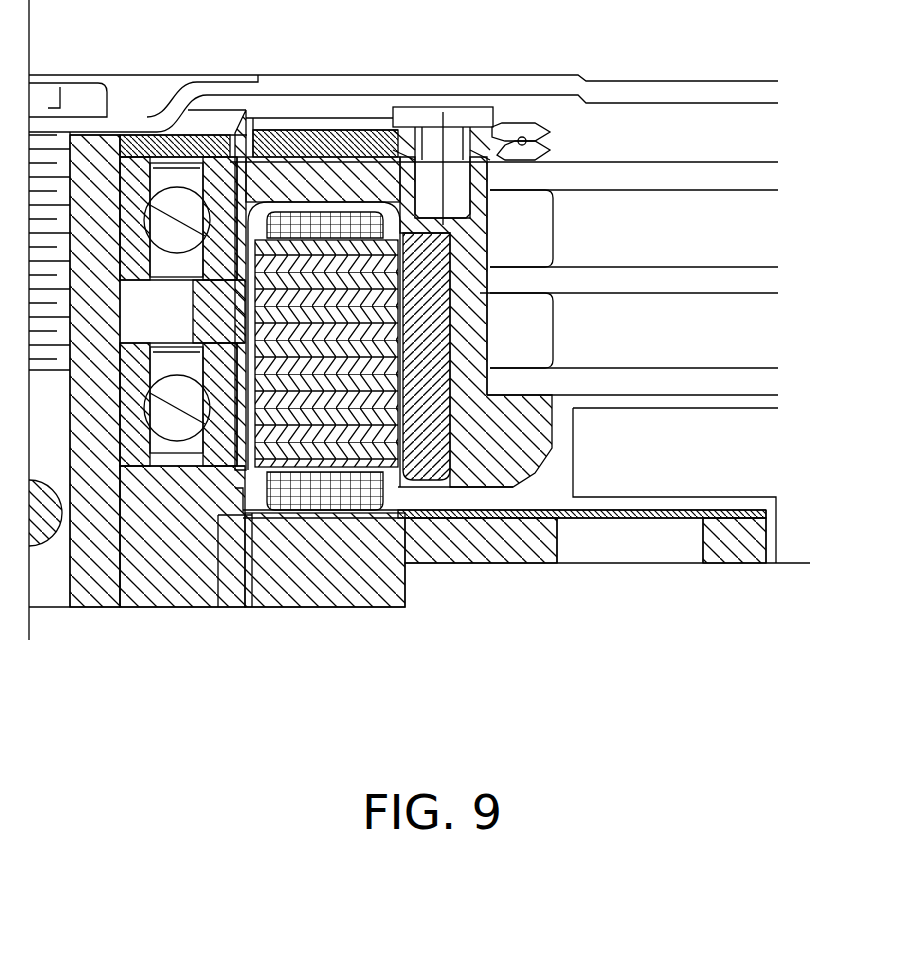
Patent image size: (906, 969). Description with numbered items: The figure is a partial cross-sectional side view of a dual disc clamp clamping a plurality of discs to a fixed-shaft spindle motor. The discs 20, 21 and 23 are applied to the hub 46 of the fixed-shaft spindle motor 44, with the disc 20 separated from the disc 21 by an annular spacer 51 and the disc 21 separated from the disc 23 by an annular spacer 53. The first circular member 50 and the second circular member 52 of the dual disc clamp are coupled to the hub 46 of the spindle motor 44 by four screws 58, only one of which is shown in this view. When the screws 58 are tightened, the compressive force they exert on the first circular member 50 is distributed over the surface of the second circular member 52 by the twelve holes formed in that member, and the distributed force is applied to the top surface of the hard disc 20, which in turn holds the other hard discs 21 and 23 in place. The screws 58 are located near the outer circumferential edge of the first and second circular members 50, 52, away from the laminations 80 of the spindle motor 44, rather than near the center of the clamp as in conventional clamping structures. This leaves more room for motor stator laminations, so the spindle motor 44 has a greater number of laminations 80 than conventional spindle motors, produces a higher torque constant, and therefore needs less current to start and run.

The disc 20 is at (703, 136).
The disc 21 is at (703, 244).
The disc 23 is at (703, 352).
The fixed-shaft spindle motor 44 is at (100, 608).
The hub 46 is at (540, 462).
The first circular member 50 is at (563, 127).
The annular spacer 51 is at (563, 228).
The second circular member 52 is at (563, 152).
The annular spacer 53 is at (563, 337).
The screw 58 is at (452, 107).
The laminations 80 is at (340, 445).